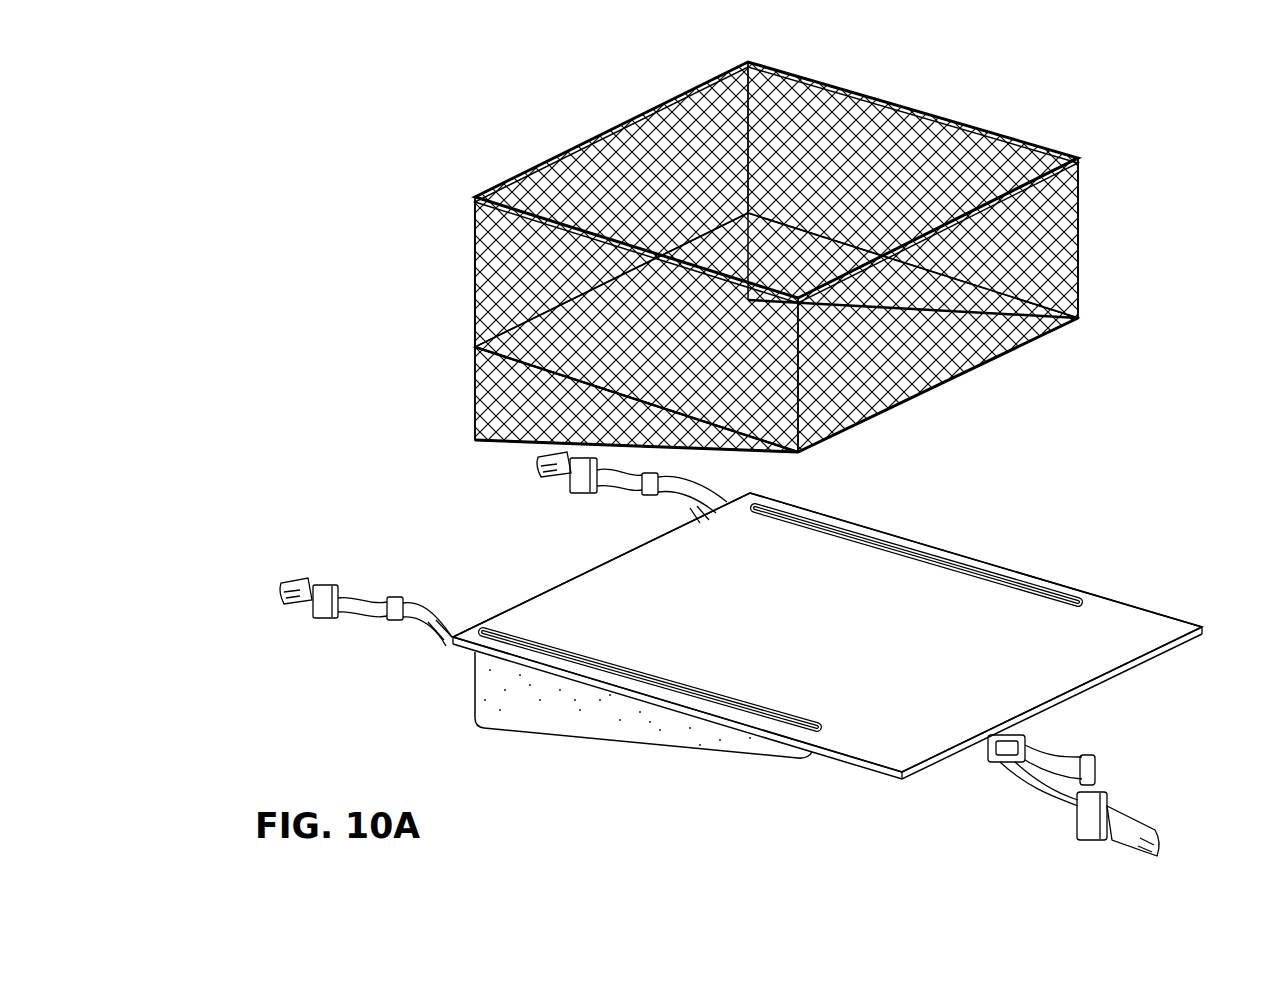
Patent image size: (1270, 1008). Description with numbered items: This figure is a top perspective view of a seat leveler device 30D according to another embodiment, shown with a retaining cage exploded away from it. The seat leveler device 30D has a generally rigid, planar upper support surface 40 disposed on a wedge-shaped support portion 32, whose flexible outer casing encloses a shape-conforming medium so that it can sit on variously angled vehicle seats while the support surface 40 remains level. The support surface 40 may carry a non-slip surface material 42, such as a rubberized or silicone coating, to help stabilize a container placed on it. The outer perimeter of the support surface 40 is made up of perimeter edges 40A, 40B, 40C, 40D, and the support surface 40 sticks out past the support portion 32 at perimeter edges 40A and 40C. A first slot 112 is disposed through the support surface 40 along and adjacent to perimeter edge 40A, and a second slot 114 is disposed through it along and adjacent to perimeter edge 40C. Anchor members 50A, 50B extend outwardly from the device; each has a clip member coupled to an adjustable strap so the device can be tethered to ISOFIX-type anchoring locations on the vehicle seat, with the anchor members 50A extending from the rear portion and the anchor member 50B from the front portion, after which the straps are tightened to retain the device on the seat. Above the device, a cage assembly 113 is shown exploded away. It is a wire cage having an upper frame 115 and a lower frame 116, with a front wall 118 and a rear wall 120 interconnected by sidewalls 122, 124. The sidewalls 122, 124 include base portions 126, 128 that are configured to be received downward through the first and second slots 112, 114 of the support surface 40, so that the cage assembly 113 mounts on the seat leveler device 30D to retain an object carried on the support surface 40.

The cage assembly 113 is at (968, 95).
The upper frame 115 is at (1048, 138).
The rear wall 120 is at (566, 197).
The sidewall 124 is at (845, 128).
The base portion 128 is at (765, 255).
The front wall 118 is at (1062, 258).
The sidewall 122 is at (590, 318).
The base portion 126 is at (535, 400).
The lower frame 116 is at (1003, 370).
The seat leveler device 30D is at (753, 654).
The upper support surface 40 is at (843, 654).
The non-slip surface material 42 is at (1158, 624).
The perimeter edge 40A is at (771, 735).
The perimeter edge 40B is at (1078, 690).
The perimeter edge 40C is at (968, 560).
The perimeter edge 40D is at (566, 583).
The first slot 112 is at (716, 705).
The second slot 114 is at (880, 540).
The support portion 32 is at (462, 690).
The anchor member 50A is at (535, 483).
The anchor member 50B is at (1113, 802).